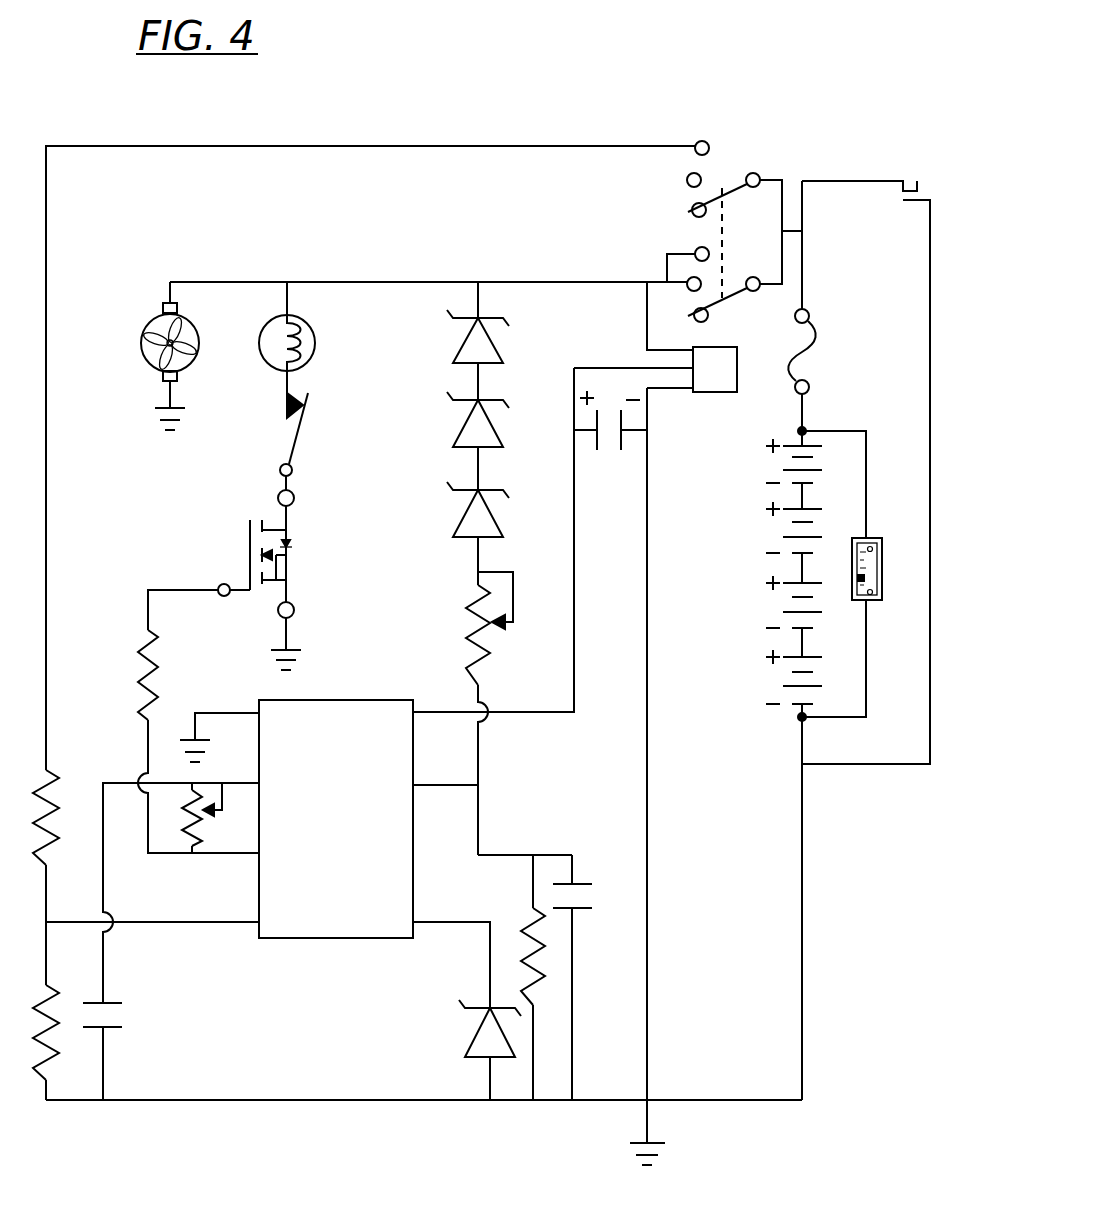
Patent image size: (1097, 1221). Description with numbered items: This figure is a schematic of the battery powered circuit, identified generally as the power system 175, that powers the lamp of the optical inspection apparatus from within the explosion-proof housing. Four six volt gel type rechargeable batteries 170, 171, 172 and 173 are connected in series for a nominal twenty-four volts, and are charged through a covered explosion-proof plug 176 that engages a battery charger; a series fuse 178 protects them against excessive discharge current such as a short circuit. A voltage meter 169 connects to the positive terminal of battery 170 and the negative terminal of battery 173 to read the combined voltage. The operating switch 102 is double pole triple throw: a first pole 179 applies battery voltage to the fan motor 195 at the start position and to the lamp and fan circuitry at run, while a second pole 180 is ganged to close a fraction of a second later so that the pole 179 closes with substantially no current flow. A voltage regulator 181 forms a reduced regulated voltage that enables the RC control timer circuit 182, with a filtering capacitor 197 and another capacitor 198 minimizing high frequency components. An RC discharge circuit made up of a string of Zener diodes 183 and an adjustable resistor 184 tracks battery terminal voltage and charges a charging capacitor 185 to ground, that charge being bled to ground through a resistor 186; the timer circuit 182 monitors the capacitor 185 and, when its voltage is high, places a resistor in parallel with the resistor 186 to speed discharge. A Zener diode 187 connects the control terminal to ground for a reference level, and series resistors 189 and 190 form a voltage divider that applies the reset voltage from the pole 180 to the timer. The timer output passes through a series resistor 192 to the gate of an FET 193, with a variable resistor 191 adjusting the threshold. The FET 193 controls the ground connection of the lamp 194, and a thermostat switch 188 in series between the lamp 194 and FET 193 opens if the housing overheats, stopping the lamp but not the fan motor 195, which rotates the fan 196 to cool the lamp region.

The operating switch 102 is at (738, 113).
The voltage meter 169 is at (884, 553).
The battery 170 is at (790, 462).
The battery 171 is at (790, 535).
The battery 172 is at (790, 608).
The battery 173 is at (790, 683).
The power system 175 is at (445, 119).
The covered explosion-proof plug 176 is at (915, 180).
The series fuse 178 is at (812, 350).
The first pole 179 is at (752, 277).
The second pole 180 is at (753, 172).
The voltage regulator 181 is at (735, 395).
The RC control timer circuit 182 is at (340, 700).
The string of Zener diodes 183 is at (460, 350).
The adjustable resistor 184 is at (470, 629).
The charging capacitor 185 is at (585, 882).
The resistor 186 is at (531, 916).
The Zener diode 187 is at (478, 1042).
The thermostat switch 188 is at (299, 436).
The series resistor 189 is at (53, 778).
The series resistor 190 is at (48, 998).
The variable resistor 191 is at (199, 822).
The series resistor 192 is at (150, 661).
The FET 193 is at (286, 556).
The lamp 194 is at (262, 337).
The fan motor 195 is at (183, 360).
The fan 196 is at (162, 332).
The filtering capacitor 197 is at (628, 452).
The capacitor 198 is at (111, 1000).